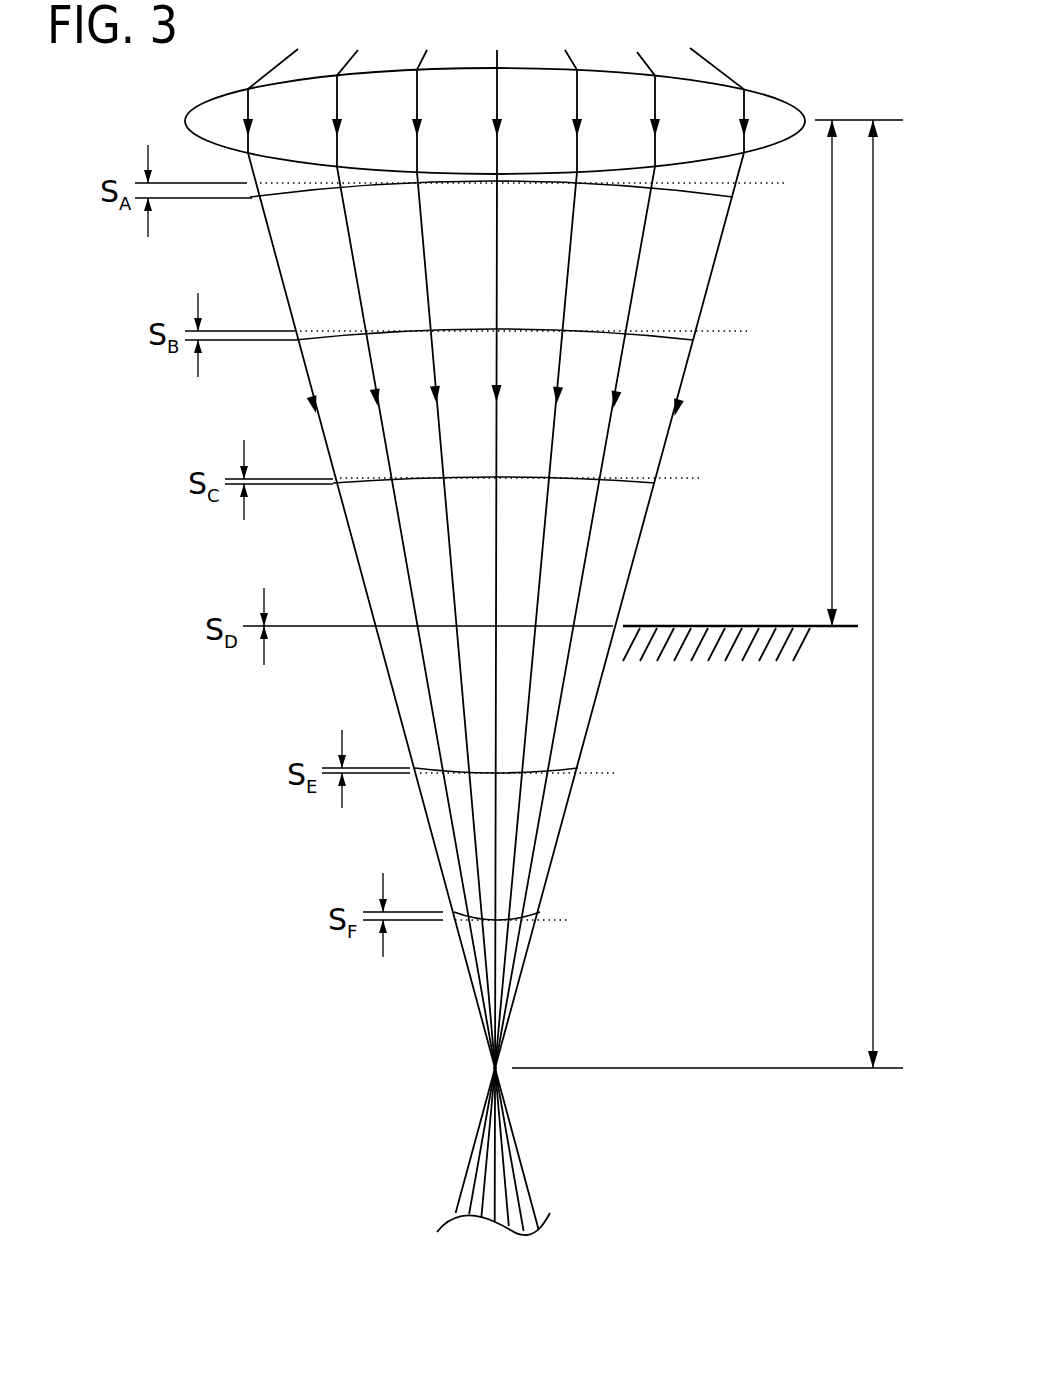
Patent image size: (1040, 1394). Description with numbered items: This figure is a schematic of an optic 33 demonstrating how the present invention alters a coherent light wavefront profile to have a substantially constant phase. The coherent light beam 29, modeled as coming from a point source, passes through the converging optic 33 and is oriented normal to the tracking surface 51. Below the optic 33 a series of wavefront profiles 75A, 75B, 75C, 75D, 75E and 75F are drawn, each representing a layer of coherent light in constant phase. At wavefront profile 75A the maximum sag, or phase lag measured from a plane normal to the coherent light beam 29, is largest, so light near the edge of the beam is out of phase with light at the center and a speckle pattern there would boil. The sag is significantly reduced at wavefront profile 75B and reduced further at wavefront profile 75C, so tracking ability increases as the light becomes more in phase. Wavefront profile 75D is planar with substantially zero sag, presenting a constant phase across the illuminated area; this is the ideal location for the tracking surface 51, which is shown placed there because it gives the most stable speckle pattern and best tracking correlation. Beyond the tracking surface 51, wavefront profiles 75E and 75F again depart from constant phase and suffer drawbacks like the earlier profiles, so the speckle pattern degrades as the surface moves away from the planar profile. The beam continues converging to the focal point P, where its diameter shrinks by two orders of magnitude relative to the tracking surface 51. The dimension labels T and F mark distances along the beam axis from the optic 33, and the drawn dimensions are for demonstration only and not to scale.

The coherent light beam 29 is at (720, 54).
The optic 33 is at (777, 98).
The wavefront profile 75A is at (697, 194).
The wavefront profile 75B is at (680, 340).
The wavefront profile 75C is at (643, 483).
The wavefront profile 75D is at (607, 625).
The tracking surface 51 is at (723, 626).
The wavefront profile 75E is at (562, 770).
The wavefront profile 75F is at (527, 912).
The focal point P is at (490, 1065).
The distance from lens to surface T is at (821, 373).
The focal length F is at (884, 594).